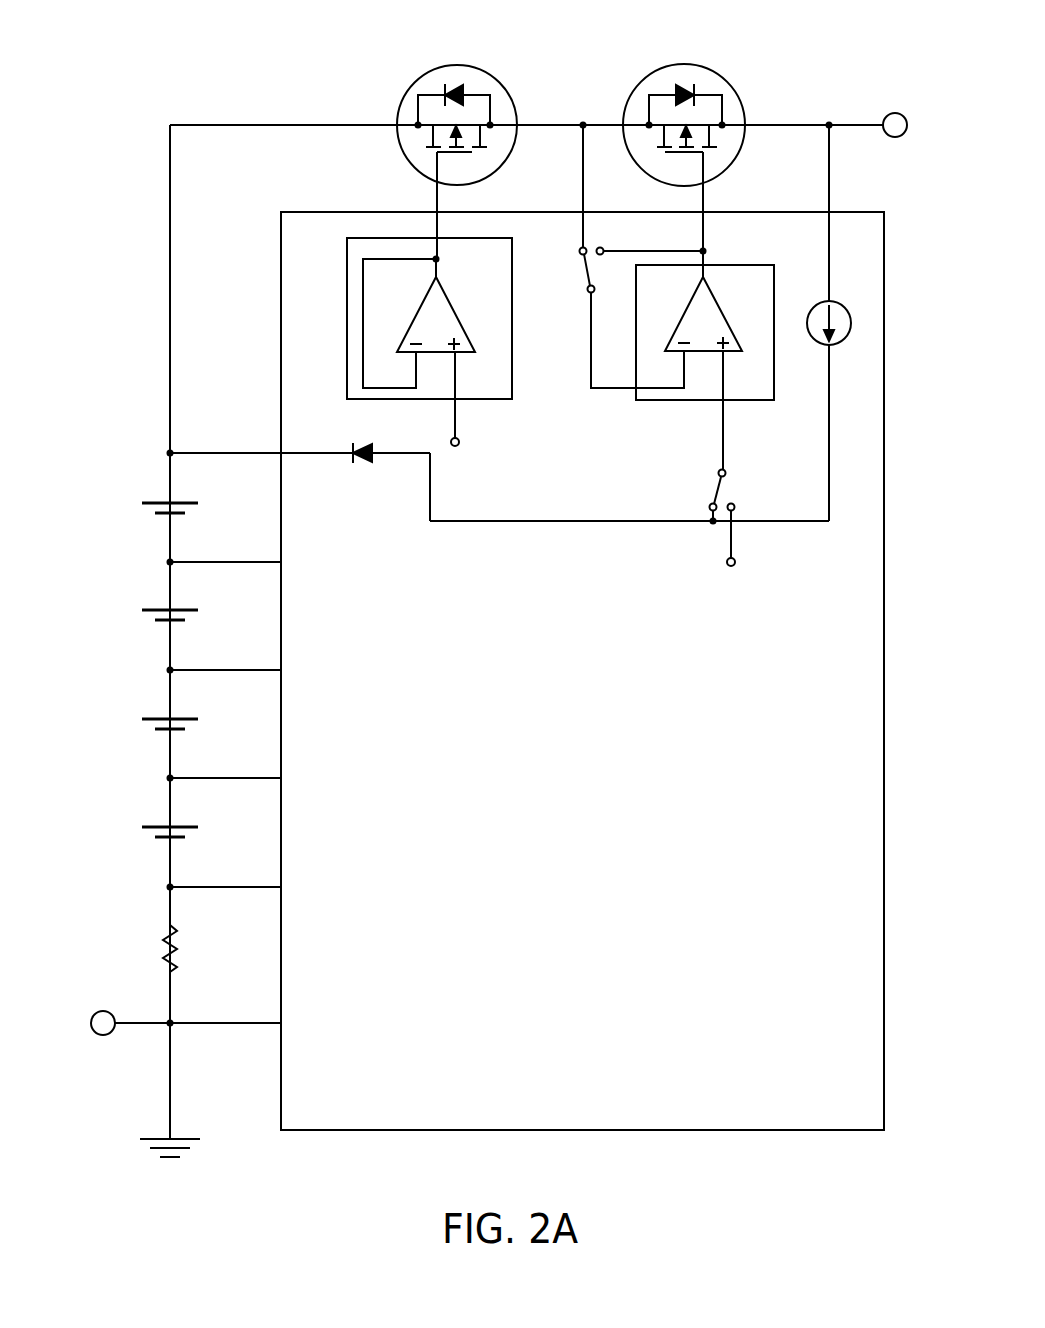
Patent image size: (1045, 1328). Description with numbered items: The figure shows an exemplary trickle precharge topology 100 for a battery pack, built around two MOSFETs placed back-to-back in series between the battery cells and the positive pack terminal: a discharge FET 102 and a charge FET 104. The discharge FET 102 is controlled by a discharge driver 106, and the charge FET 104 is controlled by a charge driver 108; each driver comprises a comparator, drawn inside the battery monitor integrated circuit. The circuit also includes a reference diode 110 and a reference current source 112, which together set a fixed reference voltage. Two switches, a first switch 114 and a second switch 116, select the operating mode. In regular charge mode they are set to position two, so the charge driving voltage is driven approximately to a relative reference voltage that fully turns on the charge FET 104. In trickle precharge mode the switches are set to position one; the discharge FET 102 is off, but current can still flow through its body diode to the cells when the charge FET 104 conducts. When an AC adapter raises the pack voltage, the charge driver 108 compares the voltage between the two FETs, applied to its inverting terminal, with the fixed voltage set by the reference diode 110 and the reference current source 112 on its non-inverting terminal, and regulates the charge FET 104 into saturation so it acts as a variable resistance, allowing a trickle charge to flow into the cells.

The trickle precharge topology 100 is at (172, 91).
The discharge FET 102 is at (452, 66).
The charge FET 104 is at (724, 80).
The discharge driver 106 is at (512, 370).
The charge driver 108 is at (676, 400).
The reference diode D1 110 is at (370, 460).
The reference current source Iref 112 is at (838, 343).
The switch K1 114 is at (570, 256).
The switch K2 116 is at (726, 523).